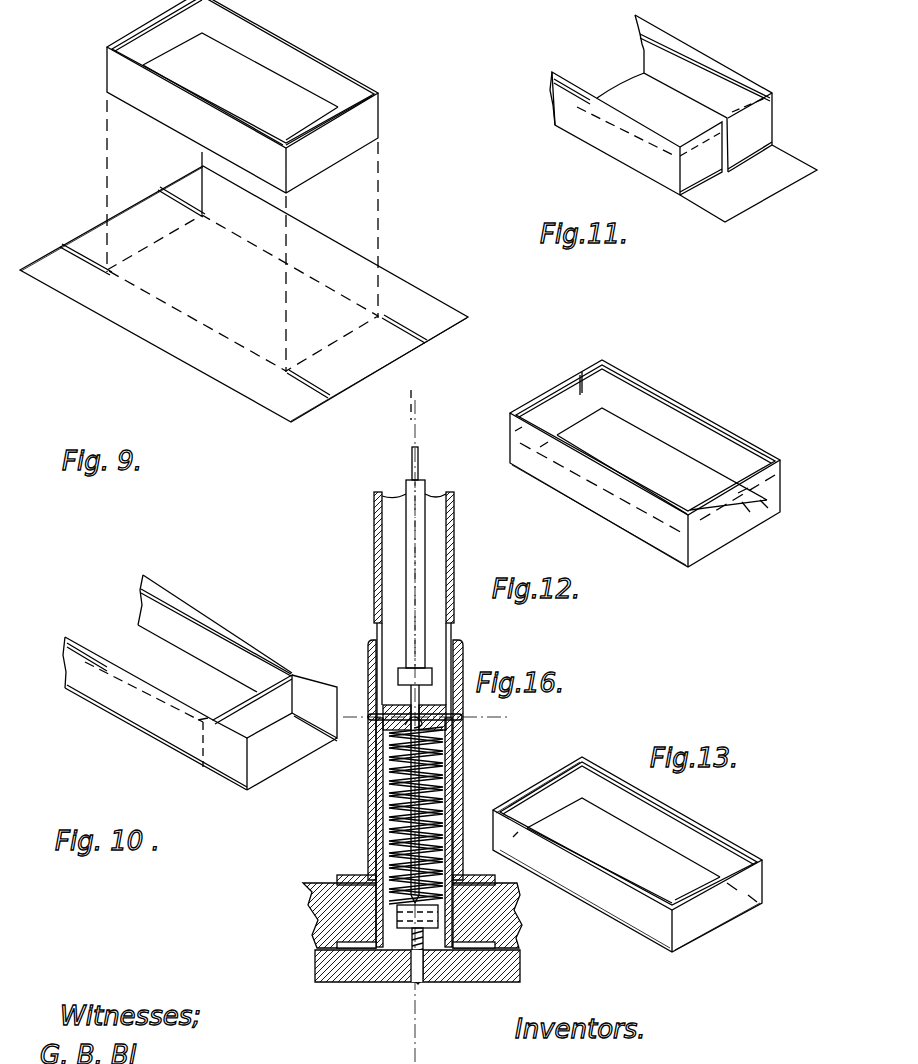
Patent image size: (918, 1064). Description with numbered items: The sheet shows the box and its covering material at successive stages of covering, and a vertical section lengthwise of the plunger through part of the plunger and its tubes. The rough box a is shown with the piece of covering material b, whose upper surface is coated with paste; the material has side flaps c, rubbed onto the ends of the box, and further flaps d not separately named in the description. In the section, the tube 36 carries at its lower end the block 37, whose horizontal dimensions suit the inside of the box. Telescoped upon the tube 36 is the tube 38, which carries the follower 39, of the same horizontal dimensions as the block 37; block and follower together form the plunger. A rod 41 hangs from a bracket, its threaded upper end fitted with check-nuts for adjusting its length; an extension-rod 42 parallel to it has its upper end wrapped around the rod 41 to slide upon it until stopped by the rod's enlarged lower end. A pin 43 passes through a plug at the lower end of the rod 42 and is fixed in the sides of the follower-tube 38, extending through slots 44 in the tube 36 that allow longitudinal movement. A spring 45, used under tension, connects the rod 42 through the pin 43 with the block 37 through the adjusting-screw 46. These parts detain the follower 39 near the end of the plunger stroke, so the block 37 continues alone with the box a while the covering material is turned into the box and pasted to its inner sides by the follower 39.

In FIG. 9, the box a is at (292, 53).
In FIG. 11, the box a is at (640, 50).
In FIG. 12, the box a is at (660, 427).
In FIG. 13, the box a is at (627, 854).
In FIG. 10, the box a is at (252, 706).
In FIG. 9, the covering material b is at (244, 294).
In FIG. 11, the covering material b is at (700, 52).
In FIG. 12, the covering material b is at (642, 387).
In FIG. 13, the covering material b is at (645, 805).
In FIG. 10, the covering material b is at (135, 667).
In FIG. 9, the side flaps c is at (241, 298).
In FIG. 11, the side flaps c is at (726, 144).
In FIG. 12, the side flaps c is at (530, 400).
In FIG. 10, the side flaps c is at (267, 721).
In FIG. 9, the side flaps d is at (244, 294).
In FIG. 11, the side flaps d is at (748, 183).
In FIG. 12, the side flaps d is at (732, 492).
In FIG. 13, the side flaps d is at (552, 782).
In FIG. 10, the side flaps d is at (295, 757).
In FIG. 16, the tube 36 is at (375, 575).
In FIG. 16, the block 37 is at (325, 958).
In FIG. 16, the follower-tube 38 is at (368, 652).
In FIG. 16, the follower 39 is at (315, 905).
In FIG. 16, the rod 41 is at (420, 488).
In FIG. 16, the extension-rod 42 is at (410, 467).
In FIG. 16, the pin 43 is at (463, 717).
In FIG. 16, the slots 44 is at (452, 637).
In FIG. 16, the spring 45 is at (390, 810).
In FIG. 16, the adjusting-screw 46 is at (420, 984).